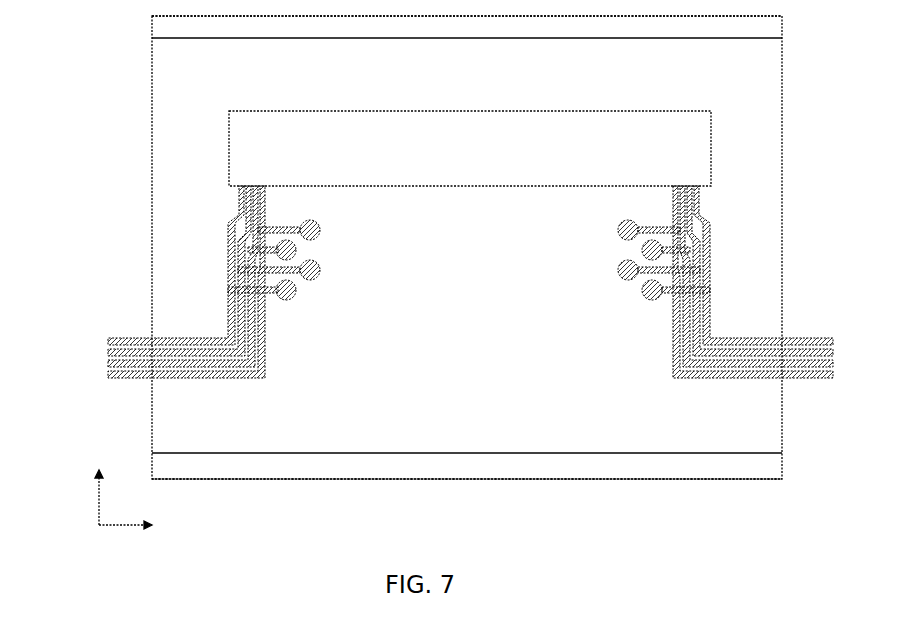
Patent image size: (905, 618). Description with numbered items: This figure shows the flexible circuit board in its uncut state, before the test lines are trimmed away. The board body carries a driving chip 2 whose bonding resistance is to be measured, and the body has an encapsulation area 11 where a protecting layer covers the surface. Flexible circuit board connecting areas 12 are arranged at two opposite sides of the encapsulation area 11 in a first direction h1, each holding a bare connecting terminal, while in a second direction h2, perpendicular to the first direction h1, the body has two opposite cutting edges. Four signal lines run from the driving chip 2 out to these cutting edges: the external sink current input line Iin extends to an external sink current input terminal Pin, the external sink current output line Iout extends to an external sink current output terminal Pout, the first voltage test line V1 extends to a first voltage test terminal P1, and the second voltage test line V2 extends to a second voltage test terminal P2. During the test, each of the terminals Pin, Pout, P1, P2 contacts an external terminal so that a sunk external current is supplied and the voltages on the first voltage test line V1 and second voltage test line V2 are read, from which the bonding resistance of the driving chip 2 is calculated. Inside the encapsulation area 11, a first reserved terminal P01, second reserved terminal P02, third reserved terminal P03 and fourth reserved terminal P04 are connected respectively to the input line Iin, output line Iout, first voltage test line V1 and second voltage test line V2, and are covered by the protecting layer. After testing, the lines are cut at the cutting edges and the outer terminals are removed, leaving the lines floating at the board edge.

The encapsulation area 11 is at (764, 232).
The flexible circuit board connecting area 12 is at (764, 27).
The driving chip 2 is at (697, 144).
The external sink current input terminal Pin is at (108, 341).
The external sink current output terminal Pout is at (108, 352).
The first voltage test terminal P1 is at (108, 364).
The second voltage test terminal P2 is at (108, 375).
The first reserved terminal P01 is at (296, 290).
The second reserved terminal P02 is at (320, 270).
The third reserved terminal P03 is at (296, 251).
The fourth reserved terminal P04 is at (320, 230).
The external sink current input line Iin is at (240, 270).
The external sink current output line Iout is at (242, 325).
The first voltage test line V1 is at (258, 345).
The second voltage test line V2 is at (265, 312).
The first direction h1 is at (97, 489).
The second direction h2 is at (137, 527).